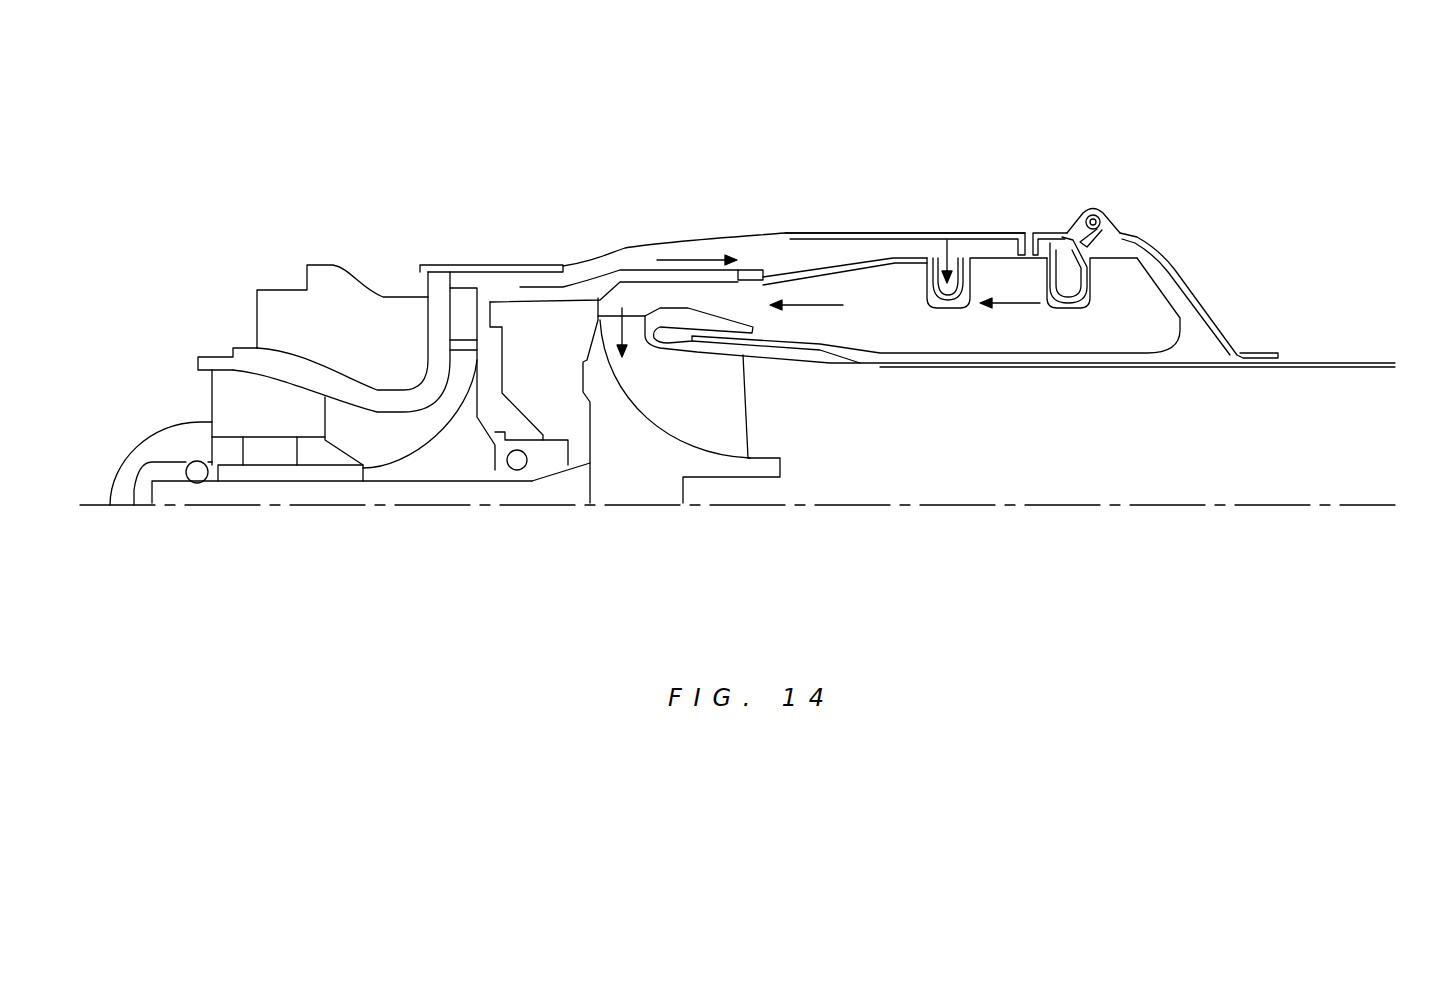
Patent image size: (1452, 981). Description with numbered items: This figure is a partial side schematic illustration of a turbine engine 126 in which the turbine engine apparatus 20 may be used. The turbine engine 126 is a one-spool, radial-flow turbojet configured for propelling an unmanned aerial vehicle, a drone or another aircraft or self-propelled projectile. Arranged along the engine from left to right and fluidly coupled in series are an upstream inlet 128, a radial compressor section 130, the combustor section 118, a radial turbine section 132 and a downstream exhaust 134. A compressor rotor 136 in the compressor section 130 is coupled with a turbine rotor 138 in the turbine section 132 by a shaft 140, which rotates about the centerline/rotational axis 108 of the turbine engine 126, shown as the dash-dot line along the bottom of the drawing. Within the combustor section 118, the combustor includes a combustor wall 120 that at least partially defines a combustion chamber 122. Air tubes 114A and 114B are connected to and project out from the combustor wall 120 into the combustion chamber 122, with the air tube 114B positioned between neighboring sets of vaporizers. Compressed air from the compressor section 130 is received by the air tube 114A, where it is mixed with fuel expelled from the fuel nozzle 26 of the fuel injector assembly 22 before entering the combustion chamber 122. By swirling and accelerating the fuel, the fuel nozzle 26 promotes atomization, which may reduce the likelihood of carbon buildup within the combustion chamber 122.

The turbine engine apparatus 20 is at (905, 173).
The combustor section 118 is at (947, 207).
The combustor wall 120 is at (990, 246).
The fuel injector assembly 22 is at (1112, 194).
The fuel nozzle 26 is at (1108, 247).
The turbine engine 126 is at (1195, 111).
The upstream inlet 128 is at (204, 396).
The air tube 114B is at (936, 328).
The air tube 114A is at (1077, 324).
The combustion chamber 122 is at (1020, 337).
The downstream exhaust 134 is at (1352, 433).
The shaft 140 is at (353, 494).
The compressor rotor 136 is at (443, 468).
The turbine rotor 138 is at (715, 480).
The compressor section 130 is at (433, 539).
The turbine section 132 is at (685, 540).
The centerline/rotational axis 108 is at (1377, 506).